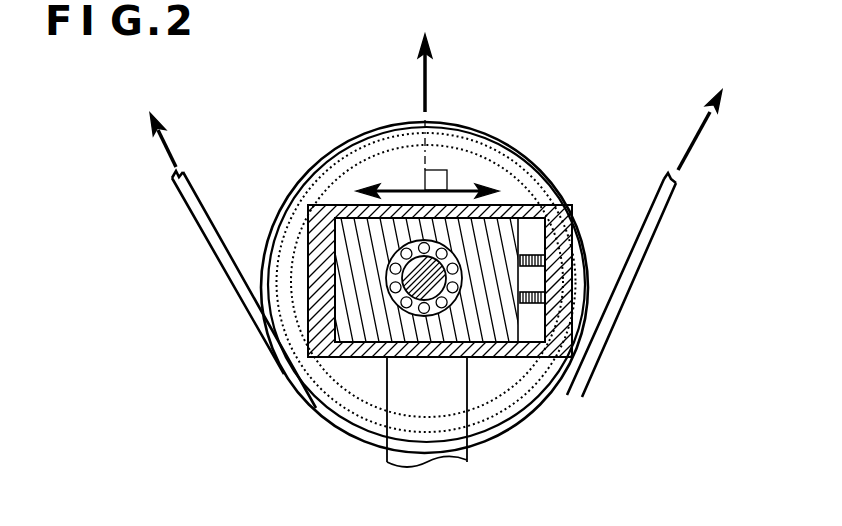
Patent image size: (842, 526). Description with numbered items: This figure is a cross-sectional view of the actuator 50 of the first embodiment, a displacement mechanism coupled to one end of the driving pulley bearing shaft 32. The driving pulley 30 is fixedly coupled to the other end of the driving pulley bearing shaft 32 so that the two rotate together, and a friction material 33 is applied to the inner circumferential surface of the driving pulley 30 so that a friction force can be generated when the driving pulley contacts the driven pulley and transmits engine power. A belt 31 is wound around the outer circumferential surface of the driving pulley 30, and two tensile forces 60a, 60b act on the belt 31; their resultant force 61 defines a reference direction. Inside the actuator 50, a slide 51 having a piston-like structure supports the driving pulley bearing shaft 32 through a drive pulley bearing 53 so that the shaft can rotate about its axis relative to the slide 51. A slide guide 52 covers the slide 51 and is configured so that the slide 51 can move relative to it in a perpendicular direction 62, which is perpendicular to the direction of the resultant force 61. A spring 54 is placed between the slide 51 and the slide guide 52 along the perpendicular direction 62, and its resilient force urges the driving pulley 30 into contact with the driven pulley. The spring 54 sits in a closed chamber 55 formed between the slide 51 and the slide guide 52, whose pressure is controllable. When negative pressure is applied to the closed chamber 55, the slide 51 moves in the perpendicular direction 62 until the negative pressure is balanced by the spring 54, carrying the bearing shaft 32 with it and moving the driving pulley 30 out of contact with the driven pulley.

The driving pulley 30 is at (322, 172).
The belt 31 is at (233, 293).
The driving pulley bearing shaft 32 is at (387, 292).
The friction material 33 is at (370, 142).
The actuator 50 is at (561, 426).
The slide 51 is at (500, 327).
The slide guide 52 is at (565, 390).
The drive pulley bearing 53 is at (386, 270).
The spring 54 is at (548, 295).
The closed chamber 55 is at (532, 208).
The tensile force 60a is at (707, 150).
The tensile force 60b is at (168, 152).
The resultant force 61 is at (427, 90).
The perpendicular direction 62 is at (457, 186).